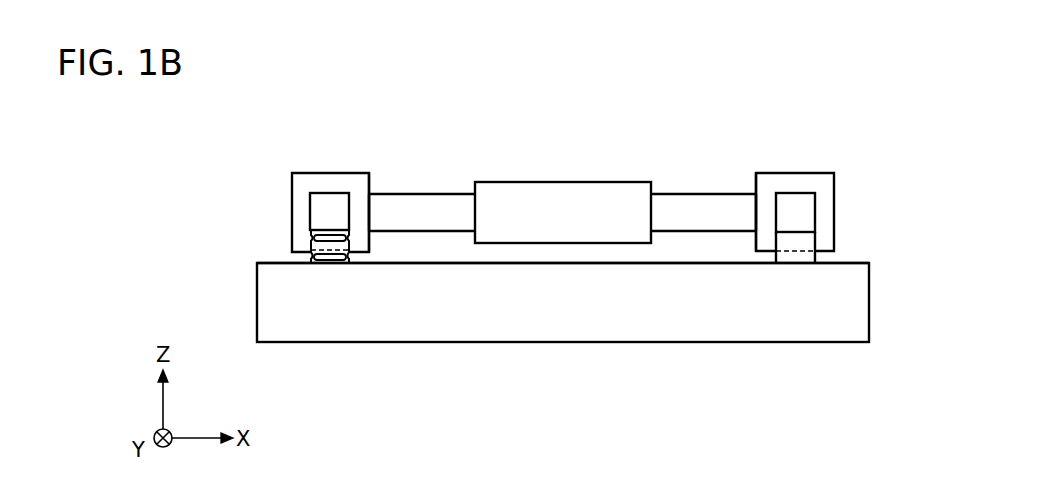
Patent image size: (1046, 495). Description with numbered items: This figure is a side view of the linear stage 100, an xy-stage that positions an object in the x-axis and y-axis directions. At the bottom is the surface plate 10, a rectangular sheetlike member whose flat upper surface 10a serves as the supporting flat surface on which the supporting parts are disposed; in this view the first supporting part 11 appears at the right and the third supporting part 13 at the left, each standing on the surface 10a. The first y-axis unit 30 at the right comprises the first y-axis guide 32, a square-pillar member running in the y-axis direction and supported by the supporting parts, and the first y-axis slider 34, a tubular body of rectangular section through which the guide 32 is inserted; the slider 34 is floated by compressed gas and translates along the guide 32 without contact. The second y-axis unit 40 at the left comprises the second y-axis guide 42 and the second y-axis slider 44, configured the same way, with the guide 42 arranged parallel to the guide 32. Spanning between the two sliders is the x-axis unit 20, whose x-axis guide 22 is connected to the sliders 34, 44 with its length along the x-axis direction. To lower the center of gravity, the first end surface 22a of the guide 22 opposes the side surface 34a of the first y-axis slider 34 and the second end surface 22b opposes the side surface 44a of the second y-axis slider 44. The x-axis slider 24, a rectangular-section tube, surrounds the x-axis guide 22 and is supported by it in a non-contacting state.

The linear stage 100 is at (585, 445).
The surface plate 10 is at (812, 323).
The surface 10a is at (690, 275).
The first supporting part 11 is at (815, 236).
The third supporting part 13 is at (311, 236).
The x-axis unit 20 is at (530, 138).
The x-axis guide 22 is at (673, 192).
The first end surface 22a is at (767, 217).
The second end surface 22b is at (361, 217).
The x-axis slider 24 is at (597, 180).
The first y-axis unit 30 is at (852, 152).
The first y-axis guide 32 is at (815, 204).
The first y-axis slider 34 is at (800, 172).
The side surface 34a is at (756, 184).
The second y-axis unit 40 is at (273, 144).
The second y-axis guide 42 is at (310, 205).
The second y-axis slider 44 is at (322, 172).
The side surface 44a is at (370, 185).